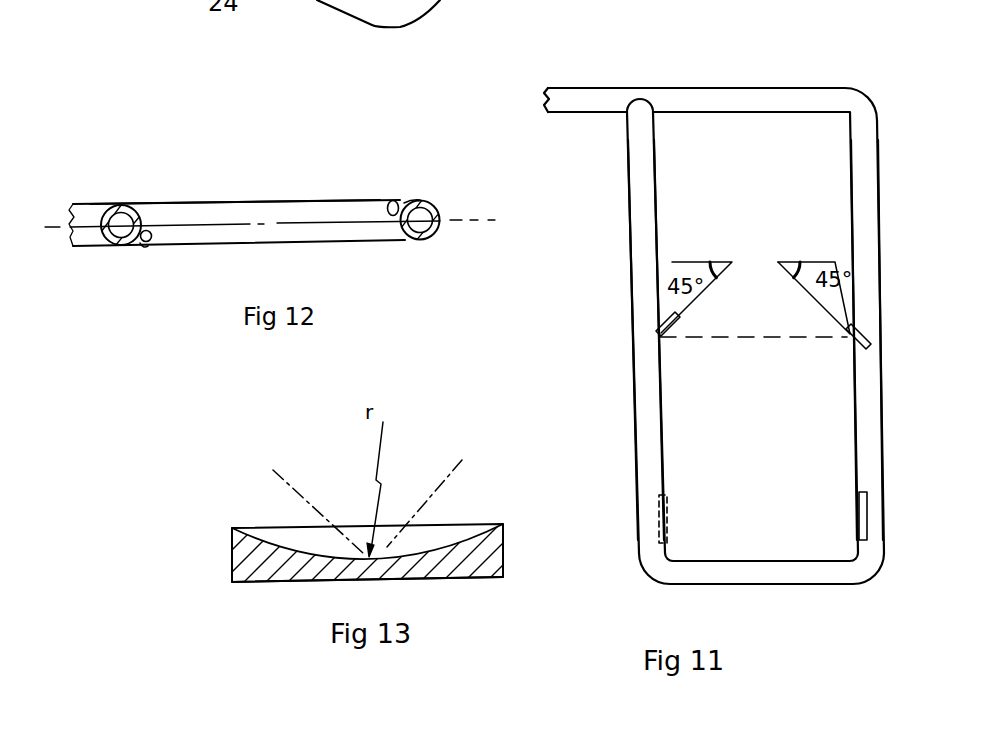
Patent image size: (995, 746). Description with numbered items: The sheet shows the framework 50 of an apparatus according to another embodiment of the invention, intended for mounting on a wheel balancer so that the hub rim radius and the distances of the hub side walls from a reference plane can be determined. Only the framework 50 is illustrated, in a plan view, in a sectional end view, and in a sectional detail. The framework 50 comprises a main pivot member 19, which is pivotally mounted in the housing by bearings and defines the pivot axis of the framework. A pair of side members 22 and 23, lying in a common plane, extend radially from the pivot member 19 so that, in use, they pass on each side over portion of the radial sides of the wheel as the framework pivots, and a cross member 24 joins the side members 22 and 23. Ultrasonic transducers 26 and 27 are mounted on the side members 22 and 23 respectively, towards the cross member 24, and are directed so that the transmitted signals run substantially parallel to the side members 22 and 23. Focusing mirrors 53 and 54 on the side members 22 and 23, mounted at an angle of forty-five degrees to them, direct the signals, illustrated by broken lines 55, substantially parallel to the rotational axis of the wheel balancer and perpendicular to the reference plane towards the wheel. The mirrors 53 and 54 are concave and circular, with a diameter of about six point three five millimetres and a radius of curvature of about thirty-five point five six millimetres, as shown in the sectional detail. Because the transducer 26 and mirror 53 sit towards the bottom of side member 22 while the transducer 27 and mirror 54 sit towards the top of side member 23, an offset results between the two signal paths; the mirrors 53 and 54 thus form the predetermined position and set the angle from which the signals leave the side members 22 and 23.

In FIG. 11, the main pivot member 19 is at (664, 97).
In FIG. 12, the main pivot member 19 is at (272, 211).
In FIG. 11, the side member 22 is at (635, 193).
In FIG. 12, the side member 22 is at (110, 208).
In FIG. 11, the side member 23 is at (852, 179).
In FIG. 12, the side member 23 is at (431, 228).
In FIG. 11, the cross member 24 is at (760, 578).
In FIG. 11, the ultrasonic transducer 26 is at (668, 511).
In FIG. 12, the ultrasonic transducer 26 is at (138, 247).
In FIG. 11, the ultrasonic transducer 27 is at (857, 507).
In FIG. 12, the ultrasonic transducer 27 is at (402, 205).
In FIG. 11, the framework 50 is at (758, 64).
In FIG. 12, the framework 50 is at (347, 172).
In FIG. 11, the focusing mirror 53 is at (668, 339).
In FIG. 12, the focusing mirror 53 is at (152, 244).
In FIG. 13, the focusing mirror 53 is at (505, 527).
In FIG. 11, the focusing mirror 54 is at (845, 341).
In FIG. 12, the focusing mirror 54 is at (394, 200).
In FIG. 13, the focusing mirror 54 is at (505, 575).
In FIG. 11, the broken lines 55 is at (722, 340).
In FIG. 13, the broken lines 55 is at (295, 489).